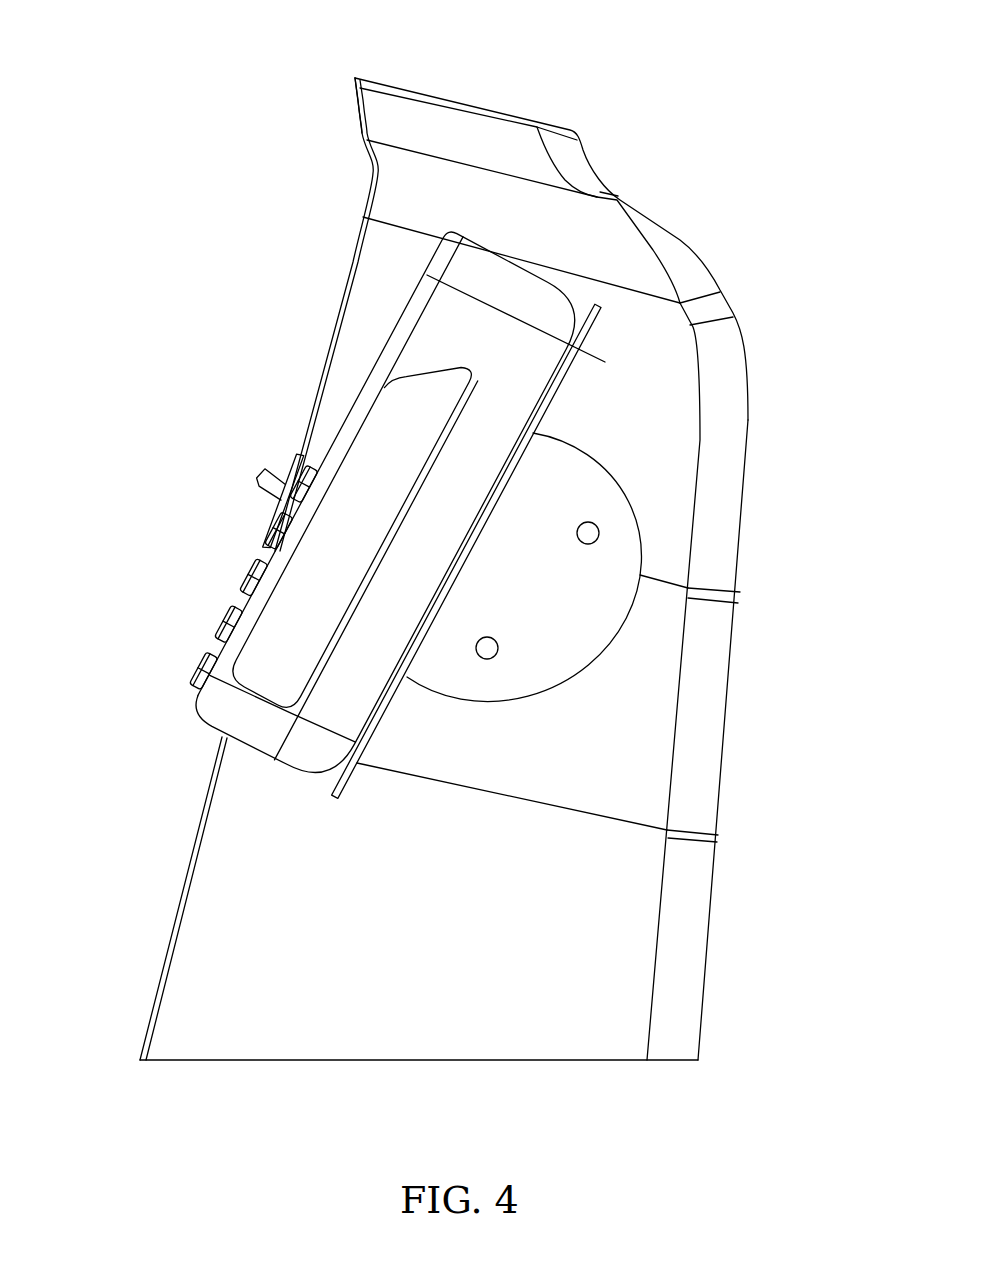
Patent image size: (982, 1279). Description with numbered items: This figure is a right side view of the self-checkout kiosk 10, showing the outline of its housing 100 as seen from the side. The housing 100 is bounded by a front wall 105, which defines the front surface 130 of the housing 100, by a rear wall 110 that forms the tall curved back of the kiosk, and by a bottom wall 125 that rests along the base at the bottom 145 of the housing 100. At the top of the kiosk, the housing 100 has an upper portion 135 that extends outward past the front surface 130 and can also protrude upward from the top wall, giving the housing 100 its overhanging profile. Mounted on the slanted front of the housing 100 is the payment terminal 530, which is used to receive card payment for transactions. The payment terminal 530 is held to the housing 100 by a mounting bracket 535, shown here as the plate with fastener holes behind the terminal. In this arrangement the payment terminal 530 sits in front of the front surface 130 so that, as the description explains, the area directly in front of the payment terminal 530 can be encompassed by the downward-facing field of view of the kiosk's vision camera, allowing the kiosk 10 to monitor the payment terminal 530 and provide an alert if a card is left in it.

The self-checkout kiosk 10 is at (170, 47).
The housing 100 is at (690, 233).
The front wall 105 is at (313, 406).
The rear wall 110 is at (748, 503).
The bottom wall 125 is at (397, 1062).
The front surface 130 is at (288, 451).
The upper portion 135 is at (357, 66).
The bottom 145 is at (128, 1050).
The payment terminal 530 is at (450, 328).
The mounting bracket 535 is at (588, 600).